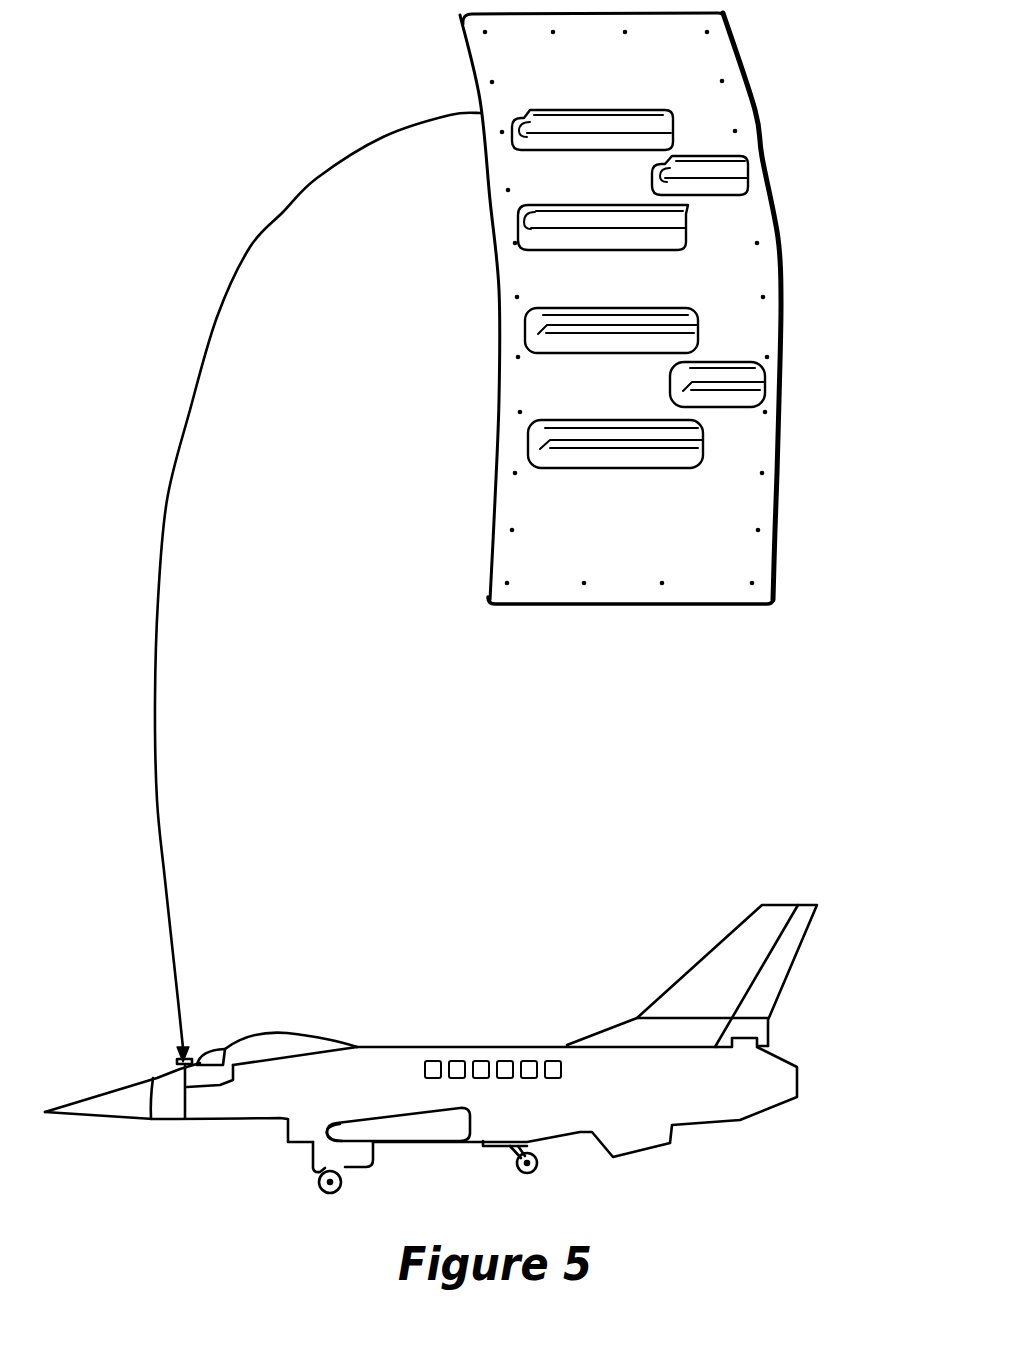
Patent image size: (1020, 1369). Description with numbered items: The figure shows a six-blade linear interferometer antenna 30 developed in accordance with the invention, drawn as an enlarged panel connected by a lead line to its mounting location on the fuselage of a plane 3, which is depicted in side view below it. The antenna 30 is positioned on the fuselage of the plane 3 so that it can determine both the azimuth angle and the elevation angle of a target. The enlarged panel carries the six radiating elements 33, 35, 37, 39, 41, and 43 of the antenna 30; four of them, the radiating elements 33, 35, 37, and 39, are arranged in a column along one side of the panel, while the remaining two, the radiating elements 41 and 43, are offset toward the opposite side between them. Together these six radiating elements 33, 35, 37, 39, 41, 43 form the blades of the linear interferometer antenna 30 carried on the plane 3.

The plane 3 is at (433, 1045).
The 6-blade linear interferometer antenna 30 is at (786, 260).
The radiating element 33 is at (521, 140).
The radiating element 35 is at (527, 230).
The radiating element 37 is at (535, 322).
The radiating element 39 is at (535, 450).
The radiating element 41 is at (738, 165).
The radiating element 43 is at (727, 398).